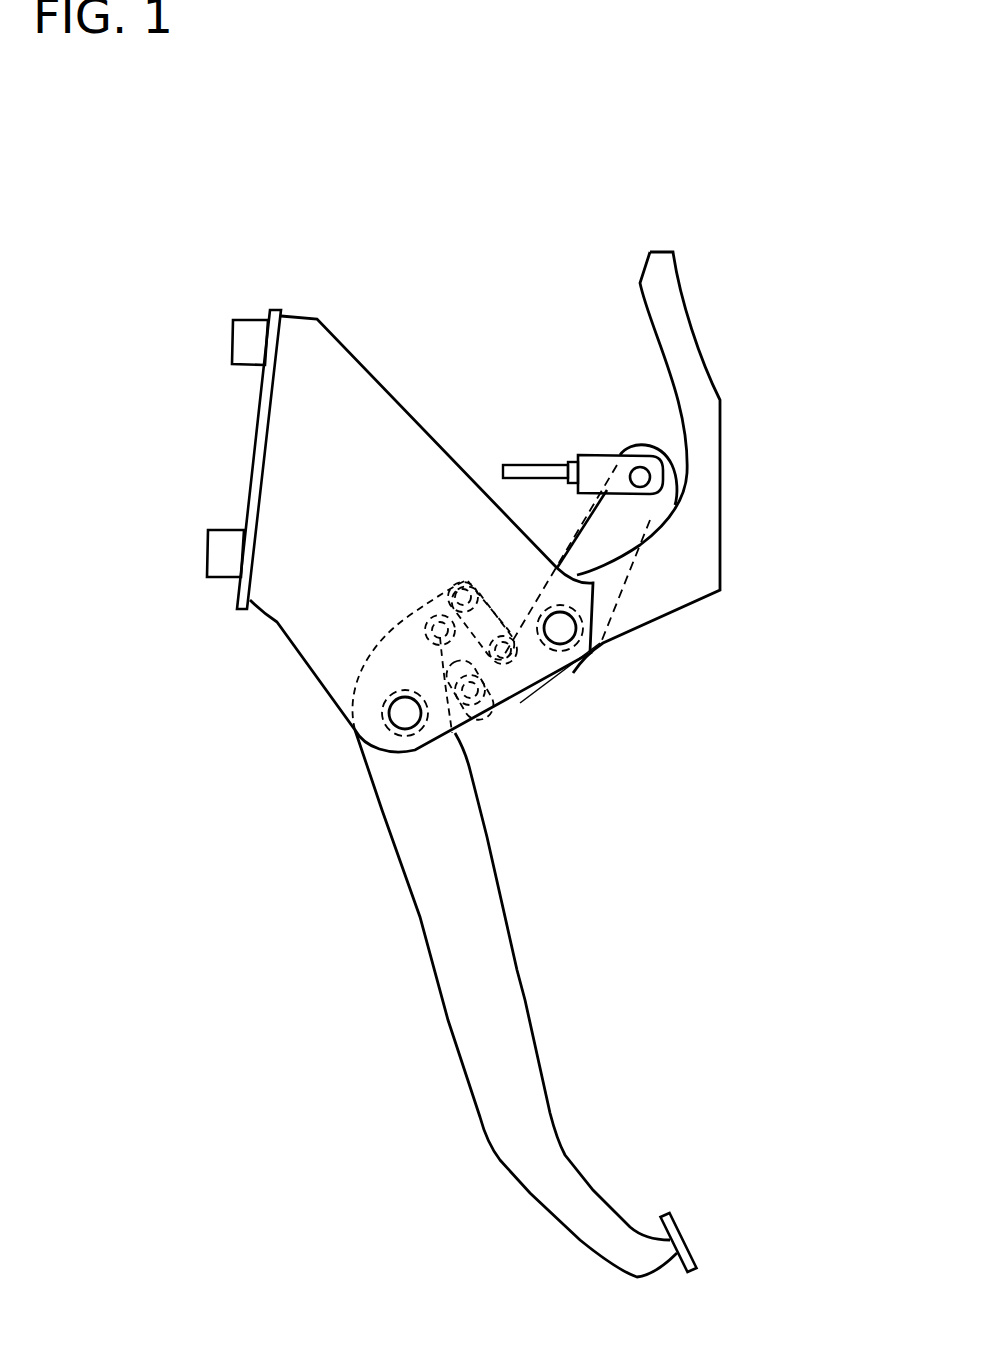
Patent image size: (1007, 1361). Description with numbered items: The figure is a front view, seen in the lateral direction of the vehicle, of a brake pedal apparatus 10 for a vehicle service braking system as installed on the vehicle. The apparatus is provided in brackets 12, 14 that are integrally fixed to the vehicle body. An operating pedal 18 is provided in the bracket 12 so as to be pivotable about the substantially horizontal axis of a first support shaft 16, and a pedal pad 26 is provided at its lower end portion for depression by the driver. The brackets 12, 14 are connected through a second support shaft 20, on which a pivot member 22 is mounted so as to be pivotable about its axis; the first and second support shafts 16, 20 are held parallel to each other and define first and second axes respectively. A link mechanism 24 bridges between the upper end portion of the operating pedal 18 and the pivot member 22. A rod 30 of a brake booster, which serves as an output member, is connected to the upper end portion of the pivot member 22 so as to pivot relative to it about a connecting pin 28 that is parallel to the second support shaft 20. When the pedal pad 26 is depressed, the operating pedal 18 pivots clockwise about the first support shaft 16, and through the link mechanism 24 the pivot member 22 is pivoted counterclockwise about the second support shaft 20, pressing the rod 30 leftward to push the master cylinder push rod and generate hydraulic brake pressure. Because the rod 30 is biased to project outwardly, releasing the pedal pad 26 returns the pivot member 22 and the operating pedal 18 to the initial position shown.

The brake pedal apparatus 10 is at (366, 1098).
The bracket 12 is at (327, 358).
The bracket 14 is at (675, 312).
The first support shaft 16 is at (405, 713).
The operating pedal 18 is at (502, 973).
The second support shaft 20 is at (560, 632).
The pivot member 22 is at (627, 523).
The link mechanism 24 is at (453, 565).
The pedal pad 26 is at (680, 1240).
The connecting pin 28 is at (638, 466).
The rod 30 is at (533, 470).